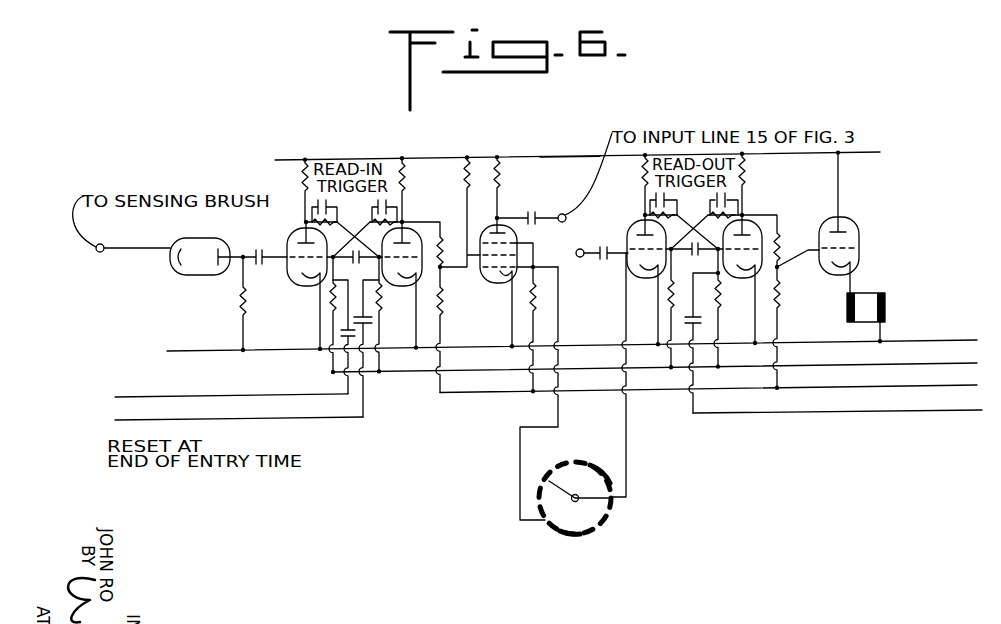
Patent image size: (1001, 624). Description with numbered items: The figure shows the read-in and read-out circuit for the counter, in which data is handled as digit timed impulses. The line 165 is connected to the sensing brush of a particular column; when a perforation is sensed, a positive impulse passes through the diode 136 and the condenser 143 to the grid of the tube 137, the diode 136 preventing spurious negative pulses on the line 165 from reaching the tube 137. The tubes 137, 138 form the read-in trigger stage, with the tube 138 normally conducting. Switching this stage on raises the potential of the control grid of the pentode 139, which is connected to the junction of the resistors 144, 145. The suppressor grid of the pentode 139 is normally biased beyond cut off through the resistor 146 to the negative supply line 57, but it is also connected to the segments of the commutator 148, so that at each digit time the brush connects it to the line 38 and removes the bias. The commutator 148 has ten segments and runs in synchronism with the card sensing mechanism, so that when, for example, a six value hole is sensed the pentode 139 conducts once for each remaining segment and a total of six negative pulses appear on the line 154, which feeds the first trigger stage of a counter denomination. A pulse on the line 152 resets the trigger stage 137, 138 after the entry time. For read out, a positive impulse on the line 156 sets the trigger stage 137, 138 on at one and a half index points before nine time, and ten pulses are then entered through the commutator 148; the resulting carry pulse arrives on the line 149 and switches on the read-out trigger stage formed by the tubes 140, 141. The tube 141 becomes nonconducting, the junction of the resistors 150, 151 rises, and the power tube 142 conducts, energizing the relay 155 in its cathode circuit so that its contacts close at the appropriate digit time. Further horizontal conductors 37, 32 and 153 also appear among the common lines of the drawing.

The line 165 is at (116, 246).
The diode 136 is at (198, 241).
The condenser 143 is at (261, 250).
The tube 137 is at (298, 283).
The tube 138 is at (404, 283).
The resistor 144 is at (443, 240).
The resistor 145 is at (443, 301).
The pentode 139 is at (493, 281).
The line 154 is at (515, 217).
The supply line 37 is at (568, 156).
The resistor 146 is at (540, 303).
The line 149 is at (587, 251).
The tube 140 is at (639, 281).
The tube 141 is at (741, 278).
The resistor 150 is at (783, 245).
The resistor 151 is at (779, 300).
The power tube 142 is at (828, 272).
The relay 155 is at (884, 300).
The line 38 is at (637, 343).
The bias line 32 is at (603, 367).
The negative supply line 57 is at (640, 392).
The line 156 is at (170, 397).
The line 152 is at (215, 422).
The line 153 is at (780, 413).
The commutator 148 is at (603, 508).